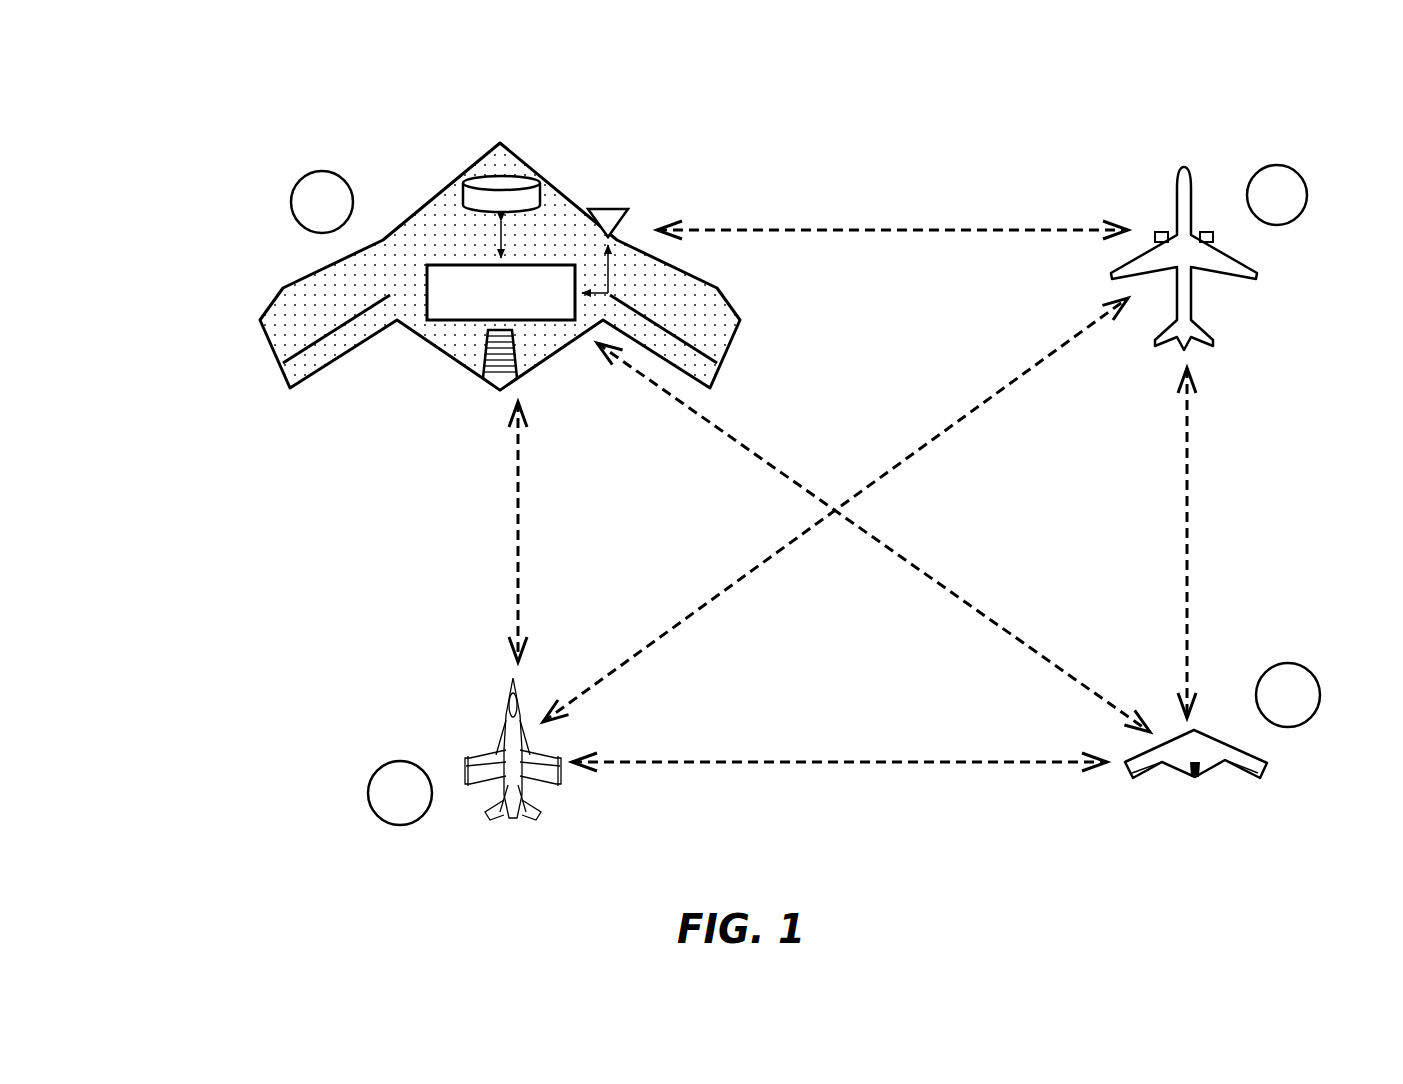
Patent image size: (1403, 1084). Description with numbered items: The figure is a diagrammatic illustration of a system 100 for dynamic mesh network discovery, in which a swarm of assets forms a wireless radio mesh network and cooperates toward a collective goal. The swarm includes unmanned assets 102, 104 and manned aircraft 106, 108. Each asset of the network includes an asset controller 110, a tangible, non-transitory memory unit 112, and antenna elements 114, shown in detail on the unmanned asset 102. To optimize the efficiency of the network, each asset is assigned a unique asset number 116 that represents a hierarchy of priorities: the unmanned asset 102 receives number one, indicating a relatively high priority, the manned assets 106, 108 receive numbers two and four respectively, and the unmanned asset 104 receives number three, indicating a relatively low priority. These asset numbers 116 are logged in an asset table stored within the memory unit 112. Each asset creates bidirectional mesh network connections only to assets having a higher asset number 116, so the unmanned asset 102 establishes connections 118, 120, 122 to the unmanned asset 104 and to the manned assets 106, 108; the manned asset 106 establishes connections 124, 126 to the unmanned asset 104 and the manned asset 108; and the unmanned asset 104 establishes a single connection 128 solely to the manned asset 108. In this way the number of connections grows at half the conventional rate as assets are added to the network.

The system 100 is at (753, 441).
The unmanned asset 102 is at (500, 243).
The unmanned asset 104 is at (1231, 678).
The manned aircraft 106 is at (1141, 174).
The manned aircraft 108 is at (443, 696).
The asset controller 110 is at (480, 308).
The memory unit 112 is at (505, 187).
The antenna elements 114 is at (609, 208).
The unique asset number 116 is at (300, 227).
The bidirectional mesh network connection 118 is at (755, 453).
The bidirectional mesh network connection 120 is at (882, 228).
The bidirectional mesh network connection 122 is at (517, 532).
The bidirectional mesh network connection 124 is at (1185, 553).
The bidirectional mesh network connection 126 is at (977, 408).
The bidirectional mesh network connection 128 is at (823, 760).